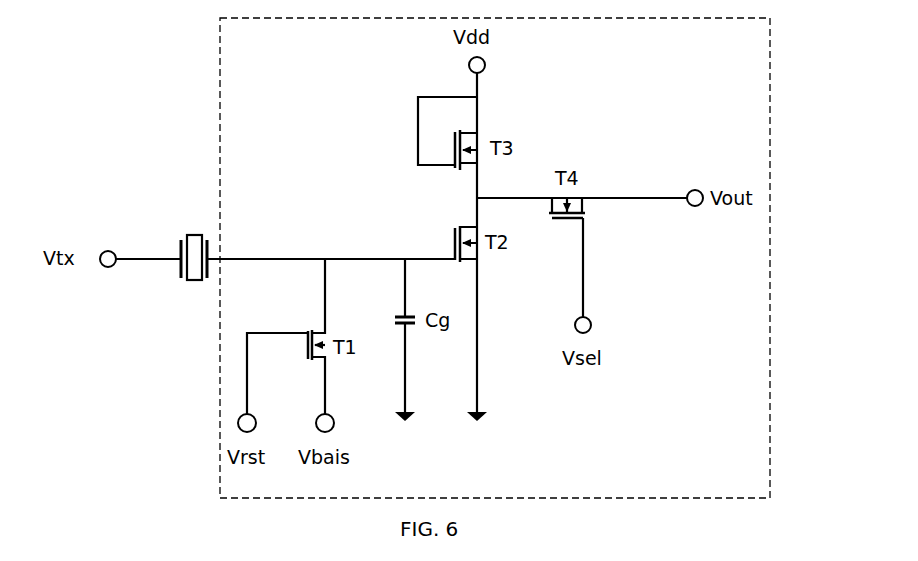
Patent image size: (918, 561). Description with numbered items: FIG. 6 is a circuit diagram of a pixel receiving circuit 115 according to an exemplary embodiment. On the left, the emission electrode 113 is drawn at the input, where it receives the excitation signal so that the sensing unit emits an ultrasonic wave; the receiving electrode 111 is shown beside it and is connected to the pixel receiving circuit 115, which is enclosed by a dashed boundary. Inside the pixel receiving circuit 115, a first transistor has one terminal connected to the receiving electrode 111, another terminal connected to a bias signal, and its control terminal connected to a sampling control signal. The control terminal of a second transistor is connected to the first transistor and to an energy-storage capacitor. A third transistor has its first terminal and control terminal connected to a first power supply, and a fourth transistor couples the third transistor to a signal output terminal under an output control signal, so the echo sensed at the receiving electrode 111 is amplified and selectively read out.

The receiving electrode 111 is at (210, 243).
The emission electrode 113 is at (178, 243).
The pixel receiving circuit 115 is at (771, 178).